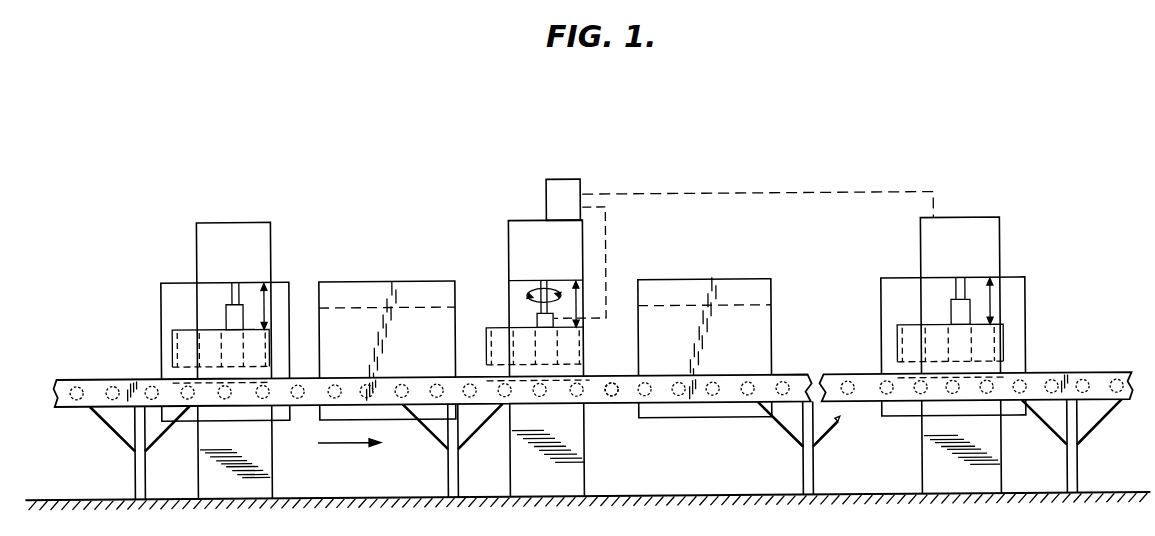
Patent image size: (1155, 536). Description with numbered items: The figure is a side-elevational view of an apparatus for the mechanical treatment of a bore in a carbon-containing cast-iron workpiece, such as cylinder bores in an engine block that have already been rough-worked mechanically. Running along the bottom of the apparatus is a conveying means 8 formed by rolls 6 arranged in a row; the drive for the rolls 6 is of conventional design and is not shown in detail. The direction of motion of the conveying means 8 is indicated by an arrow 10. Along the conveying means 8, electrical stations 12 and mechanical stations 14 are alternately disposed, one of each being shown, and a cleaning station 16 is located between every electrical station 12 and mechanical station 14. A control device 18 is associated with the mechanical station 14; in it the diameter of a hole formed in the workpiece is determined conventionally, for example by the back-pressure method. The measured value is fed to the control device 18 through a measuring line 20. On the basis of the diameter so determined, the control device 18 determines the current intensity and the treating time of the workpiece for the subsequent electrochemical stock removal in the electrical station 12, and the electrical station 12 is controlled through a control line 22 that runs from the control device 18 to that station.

The rolls 6 is at (613, 396).
The conveying means 8 is at (789, 373).
The arrow 10 is at (333, 443).
The electrical station 12 is at (286, 280).
The mechanical station 14 is at (520, 219).
The cleaning station 16 is at (372, 282).
The control device 18 is at (572, 185).
The measuring line 20 is at (607, 256).
The control line 22 is at (835, 193).